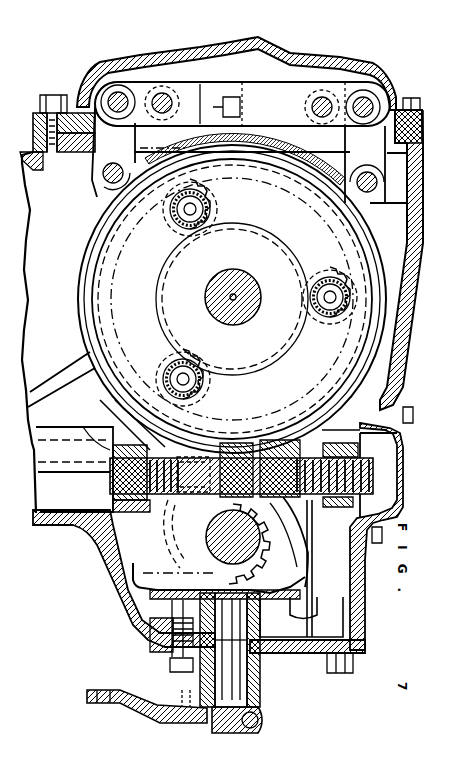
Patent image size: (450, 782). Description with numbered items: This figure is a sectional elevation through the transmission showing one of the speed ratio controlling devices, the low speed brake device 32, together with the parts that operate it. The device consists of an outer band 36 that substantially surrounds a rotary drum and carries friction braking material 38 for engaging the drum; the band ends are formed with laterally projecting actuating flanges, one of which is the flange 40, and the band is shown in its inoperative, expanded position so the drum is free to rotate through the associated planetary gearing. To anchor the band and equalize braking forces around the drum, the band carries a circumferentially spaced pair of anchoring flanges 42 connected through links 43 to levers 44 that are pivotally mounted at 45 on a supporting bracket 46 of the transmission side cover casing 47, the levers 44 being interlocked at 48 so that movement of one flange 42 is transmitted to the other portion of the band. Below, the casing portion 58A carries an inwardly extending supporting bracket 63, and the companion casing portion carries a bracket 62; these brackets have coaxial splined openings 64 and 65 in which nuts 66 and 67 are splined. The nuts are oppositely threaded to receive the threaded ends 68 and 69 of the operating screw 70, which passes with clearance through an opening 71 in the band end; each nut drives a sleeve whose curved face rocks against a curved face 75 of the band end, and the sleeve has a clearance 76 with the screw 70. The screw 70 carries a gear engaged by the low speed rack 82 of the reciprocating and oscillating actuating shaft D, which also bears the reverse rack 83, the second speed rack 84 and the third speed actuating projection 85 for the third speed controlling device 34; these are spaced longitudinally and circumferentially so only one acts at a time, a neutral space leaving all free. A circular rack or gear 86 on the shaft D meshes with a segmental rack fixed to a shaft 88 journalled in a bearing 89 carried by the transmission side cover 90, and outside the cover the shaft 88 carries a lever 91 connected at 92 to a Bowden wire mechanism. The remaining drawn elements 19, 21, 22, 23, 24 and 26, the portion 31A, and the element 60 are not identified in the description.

The ring gear 19 is at (265, 370).
The planet gear 21 is at (325, 318).
The planet gear 22 is at (163, 375).
The planet gear 23 is at (160, 365).
The planet gear bearing 24 is at (290, 335).
The planet carrier 26 is at (280, 355).
The housing wall 31A is at (412, 320).
The low speed braking device 32 is at (80, 265).
The third speed controlling device 34 is at (100, 255).
The outer band 36 is at (415, 290).
The friction braking material 38 is at (88, 323).
The actuating flange 40 is at (233, 340).
The anchoring flanges 42 is at (35, 190).
The links 43 is at (95, 160).
The levers 44 is at (190, 83).
The pivot 45 is at (165, 90).
The supporting bracket 46 is at (325, 77).
The transmission side cover casing 47 is at (215, 80).
The interlock 48 is at (242, 92).
The transmission casing portion 58A is at (108, 552).
The drive shaft 60 is at (250, 480).
The supporting bracket 62 is at (113, 482).
The supporting bracket 63 is at (122, 514).
The splined opening 64 is at (322, 520).
The splined opening 65 is at (146, 502).
The nut 66 is at (333, 515).
The nut 67 is at (365, 568).
The threaded end 68 is at (373, 466).
The threaded end 69 is at (88, 430).
The operating oscillatory shaft or screw 70 is at (256, 526).
The opening 71 is at (197, 449).
The curved face 75 is at (303, 552).
The clearance 76 is at (362, 445).
The low speed rack 82 is at (308, 565).
The reverse rack 83 is at (335, 585).
The second speed rack 84 is at (205, 548).
The third speed actuating projection 85 is at (289, 597).
The circular rack or gear 86 is at (312, 557).
The shaft 88 is at (256, 665).
The bearing 89 is at (258, 718).
The transmission side cover 90 is at (295, 655).
The lever 91 is at (162, 714).
The connection 92 is at (105, 704).